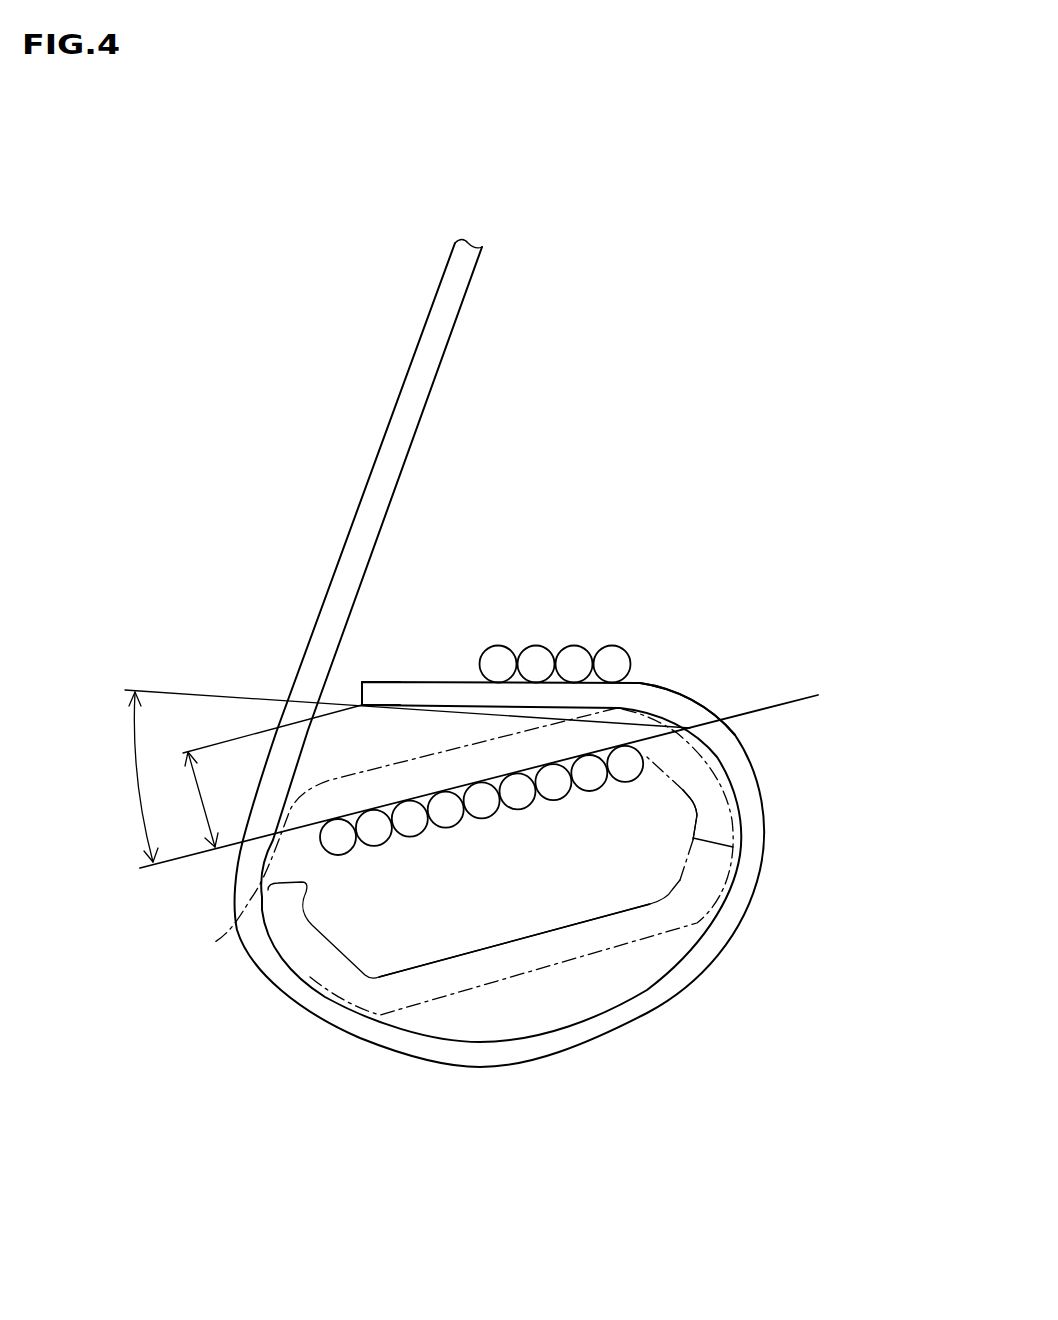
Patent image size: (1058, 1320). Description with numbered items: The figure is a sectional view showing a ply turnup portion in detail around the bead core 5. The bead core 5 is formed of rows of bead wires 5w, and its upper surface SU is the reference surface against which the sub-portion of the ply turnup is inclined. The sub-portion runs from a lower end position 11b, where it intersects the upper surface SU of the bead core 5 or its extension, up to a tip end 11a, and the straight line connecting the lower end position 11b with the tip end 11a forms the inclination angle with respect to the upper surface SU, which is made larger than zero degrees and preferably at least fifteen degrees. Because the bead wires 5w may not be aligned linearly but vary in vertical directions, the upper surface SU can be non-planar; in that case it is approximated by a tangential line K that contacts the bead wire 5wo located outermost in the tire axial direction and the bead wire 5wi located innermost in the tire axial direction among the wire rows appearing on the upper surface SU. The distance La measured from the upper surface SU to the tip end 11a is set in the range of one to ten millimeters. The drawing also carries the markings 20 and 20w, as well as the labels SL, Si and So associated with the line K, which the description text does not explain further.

The bead core 5 is at (468, 992).
The bead wire 5w is at (483, 927).
The outermost bead wire 5wo is at (627, 765).
The innermost bead wire 5wi is at (340, 837).
The tip end of sub-portion 11a is at (365, 668).
The lower end position of sub-portion 11b is at (690, 718).
The weight member 20 is at (583, 583).
The weight balls 20w is at (577, 662).
The tangential line K is at (497, 866).
The upper surface of bead core SU is at (800, 697).
The lower surface of cavity SL is at (582, 923).
The inner surface of cavity Si is at (213, 943).
The outer surface of cavity So is at (737, 848).
The distance from upper surface to tip end La is at (201, 799).